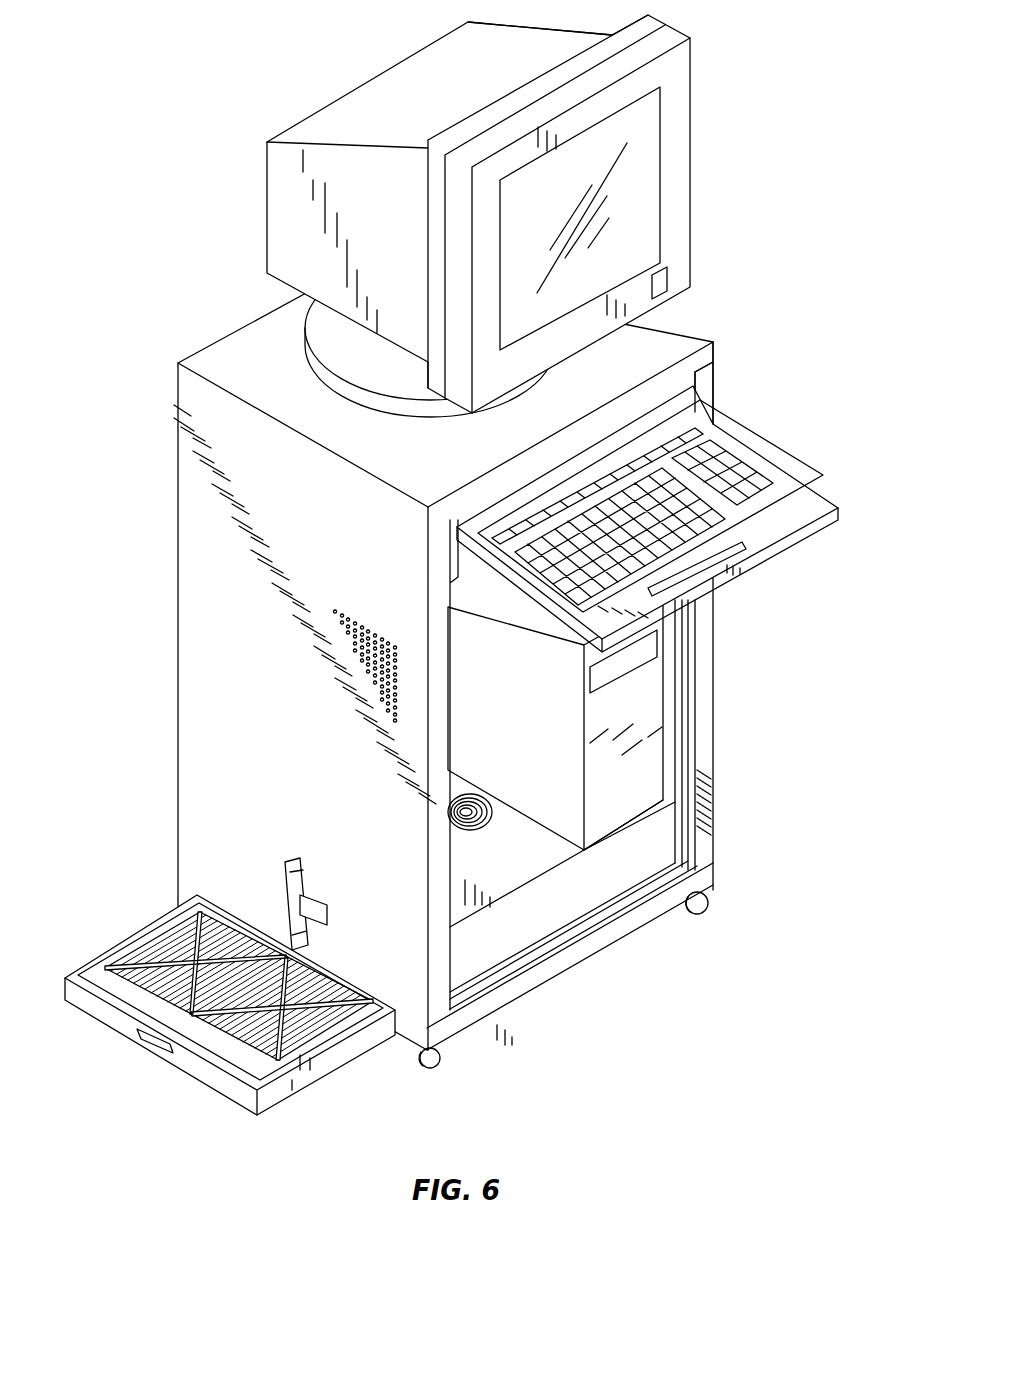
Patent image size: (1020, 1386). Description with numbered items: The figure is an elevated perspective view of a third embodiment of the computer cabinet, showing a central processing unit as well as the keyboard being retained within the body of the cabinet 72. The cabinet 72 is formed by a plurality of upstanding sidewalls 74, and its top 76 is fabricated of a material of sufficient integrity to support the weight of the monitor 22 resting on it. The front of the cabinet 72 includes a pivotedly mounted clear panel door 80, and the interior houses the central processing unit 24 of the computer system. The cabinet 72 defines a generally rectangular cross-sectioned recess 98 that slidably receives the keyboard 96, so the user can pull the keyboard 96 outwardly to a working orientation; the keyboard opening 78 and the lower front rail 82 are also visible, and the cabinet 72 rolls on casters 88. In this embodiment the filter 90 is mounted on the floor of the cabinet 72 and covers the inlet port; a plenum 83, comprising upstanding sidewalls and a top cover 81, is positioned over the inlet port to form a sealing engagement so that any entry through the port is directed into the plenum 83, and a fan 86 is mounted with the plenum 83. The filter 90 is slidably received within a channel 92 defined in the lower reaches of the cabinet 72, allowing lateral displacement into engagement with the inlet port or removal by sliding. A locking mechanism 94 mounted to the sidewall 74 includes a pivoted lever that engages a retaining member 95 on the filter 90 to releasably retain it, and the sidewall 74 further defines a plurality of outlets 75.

The monitor 22 is at (690, 168).
The computer 24 is at (519, 716).
The cabinet 72 is at (717, 725).
The sidewalls 74 is at (304, 746).
The outlets 75 is at (357, 647).
The top 76 is at (451, 462).
The keyboard tray slot 78 is at (716, 397).
The clear panel door 80 is at (645, 853).
The top cover 81 is at (520, 853).
The base rail 82 is at (580, 962).
The plenum 83 is at (560, 919).
The fan 86 is at (483, 828).
The casters 88 is at (707, 903).
The filter 90 is at (327, 1070).
The channel 92 is at (367, 985).
The locking mechanism 94 is at (298, 862).
The retaining member 95 is at (147, 1043).
The keyboard 96 is at (810, 502).
The recess 98 is at (445, 550).